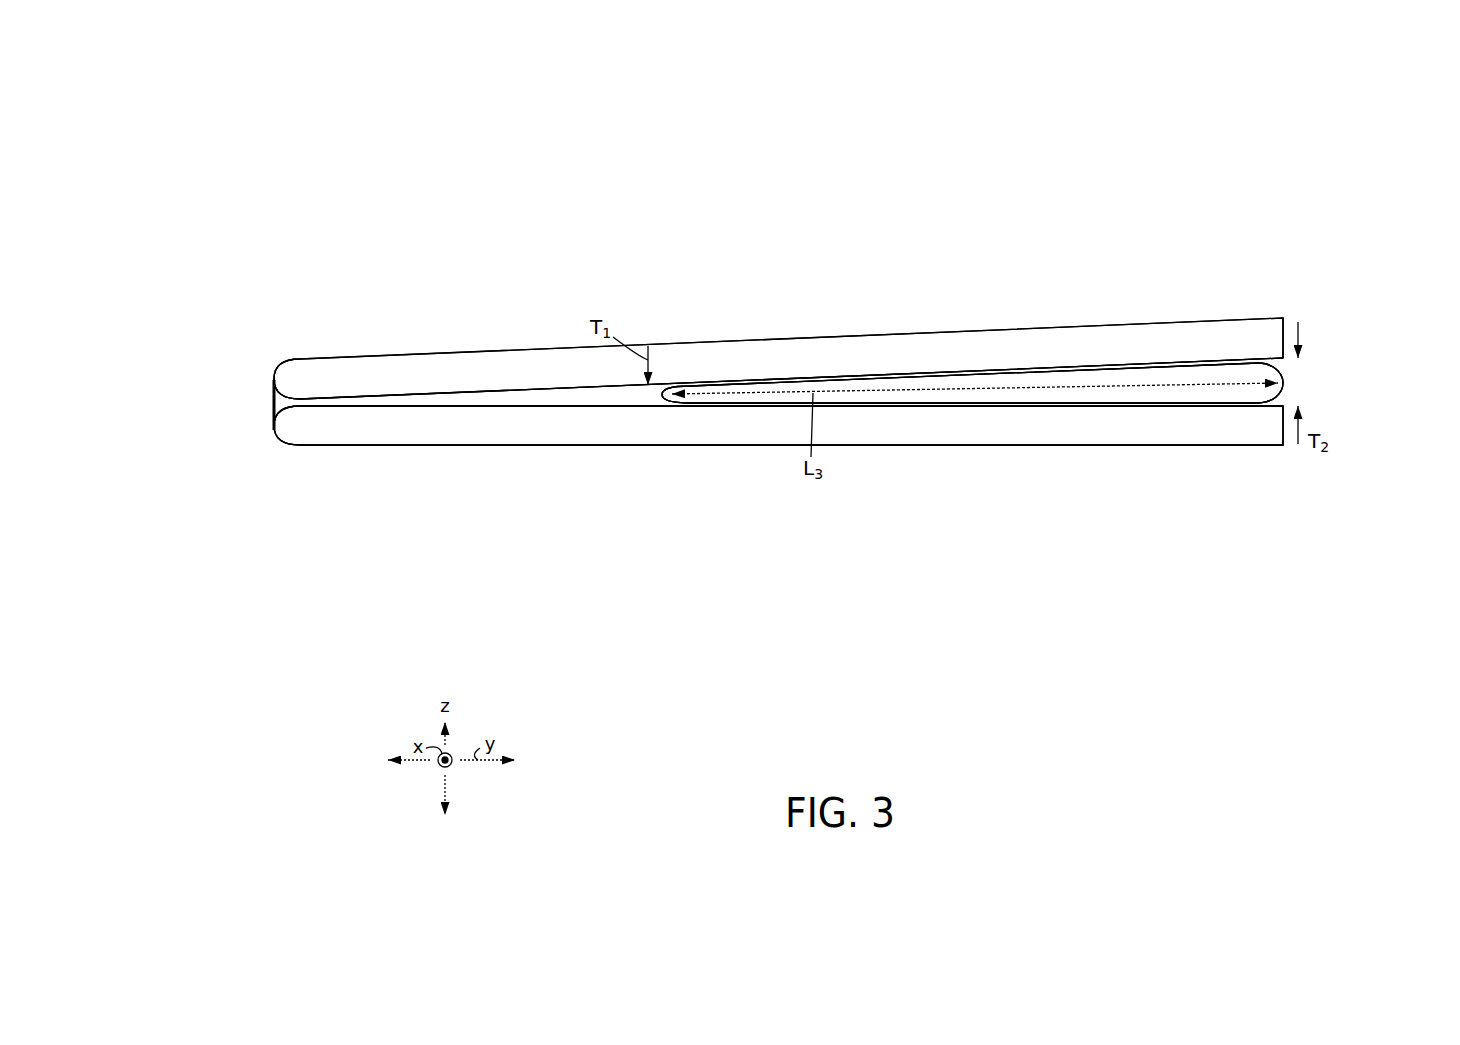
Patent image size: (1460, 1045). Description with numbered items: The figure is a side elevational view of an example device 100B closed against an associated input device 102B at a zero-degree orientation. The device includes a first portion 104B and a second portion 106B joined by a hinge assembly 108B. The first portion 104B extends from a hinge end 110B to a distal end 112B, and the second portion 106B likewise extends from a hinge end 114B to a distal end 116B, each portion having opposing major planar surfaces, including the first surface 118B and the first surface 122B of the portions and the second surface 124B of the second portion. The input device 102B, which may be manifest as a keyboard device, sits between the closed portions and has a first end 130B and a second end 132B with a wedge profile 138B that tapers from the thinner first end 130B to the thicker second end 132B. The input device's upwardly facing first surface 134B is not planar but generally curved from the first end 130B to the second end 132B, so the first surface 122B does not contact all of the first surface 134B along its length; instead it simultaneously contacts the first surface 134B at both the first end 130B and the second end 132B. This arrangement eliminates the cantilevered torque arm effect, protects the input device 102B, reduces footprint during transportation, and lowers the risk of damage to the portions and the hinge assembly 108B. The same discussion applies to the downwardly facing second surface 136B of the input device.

The device 100B is at (1057, 105).
The input device 102B is at (1322, 335).
The first portion 104B is at (318, 358).
The second portion 106B is at (703, 447).
The hinge assembly 108B is at (270, 427).
The hinge end 110B is at (274, 380).
The distal end 112B is at (1264, 313).
The hinge end 114B is at (295, 440).
The distal end 116B is at (1278, 445).
The first surface 118B is at (578, 388).
The first surface 122B is at (558, 403).
The second surface 124B is at (1017, 445).
The first end 130B is at (668, 383).
The second end 132B is at (1286, 387).
The first surface 134B is at (867, 381).
The second surface 136B is at (1078, 403).
The wedge profile 138B is at (925, 411).